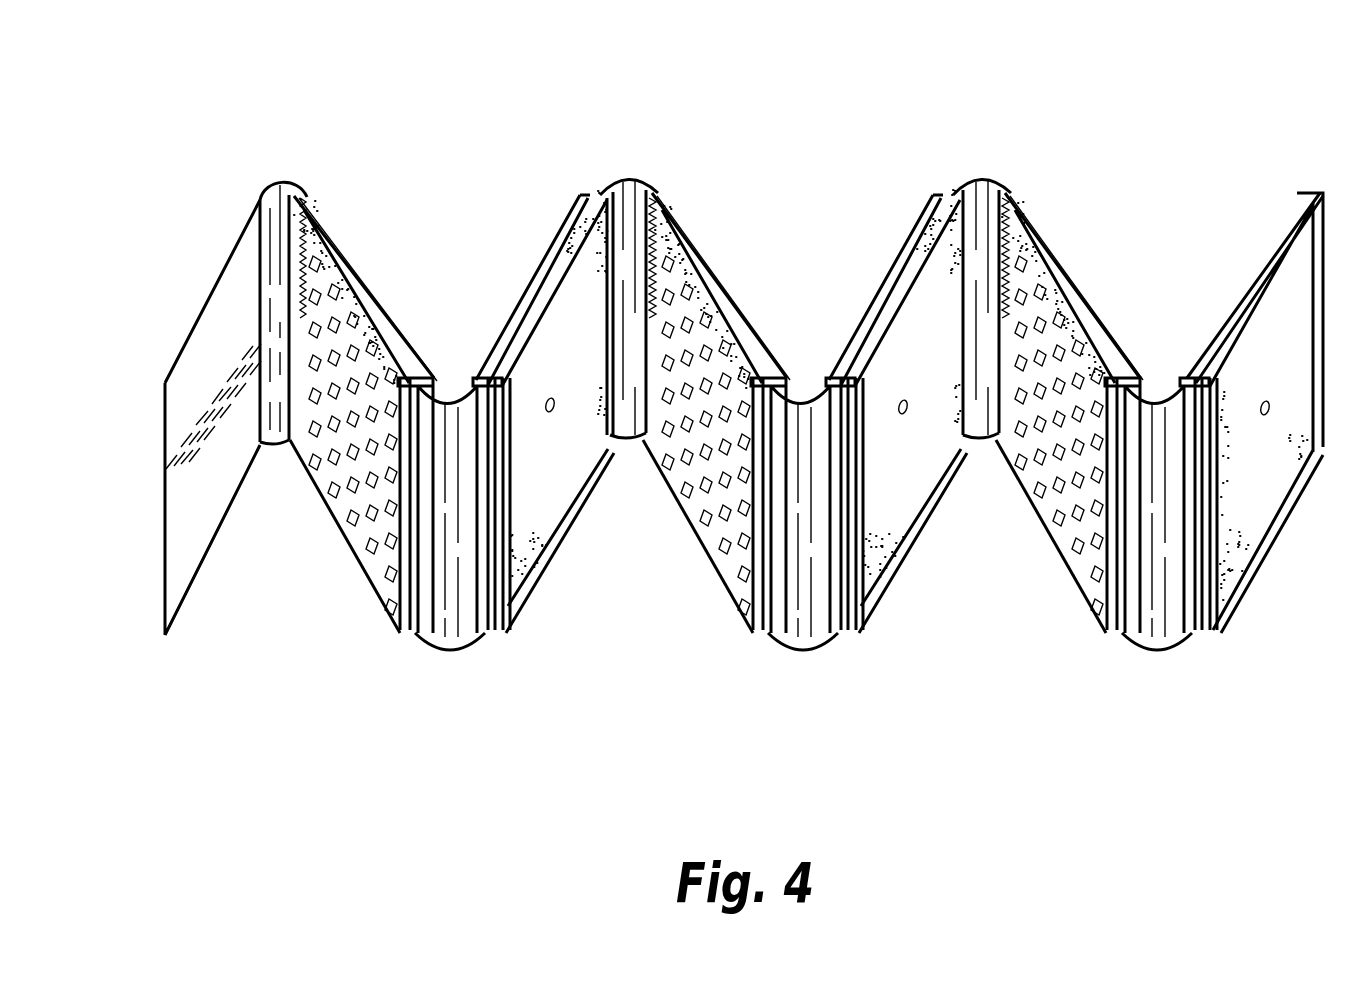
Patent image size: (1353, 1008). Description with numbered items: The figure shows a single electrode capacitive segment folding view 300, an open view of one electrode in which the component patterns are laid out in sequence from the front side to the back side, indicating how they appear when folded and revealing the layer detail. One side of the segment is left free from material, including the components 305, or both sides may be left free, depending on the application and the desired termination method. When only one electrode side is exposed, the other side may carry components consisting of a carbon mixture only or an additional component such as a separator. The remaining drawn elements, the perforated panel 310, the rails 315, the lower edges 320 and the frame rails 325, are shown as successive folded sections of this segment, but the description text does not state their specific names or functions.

The single electrode capacitive segment folding view 300 is at (287, 66).
The components 305 is at (222, 565).
The perforated panel 310 is at (668, 495).
The top rail 315 is at (732, 272).
The lower edge 320 is at (962, 468).
The frame rail 325 is at (1102, 290).